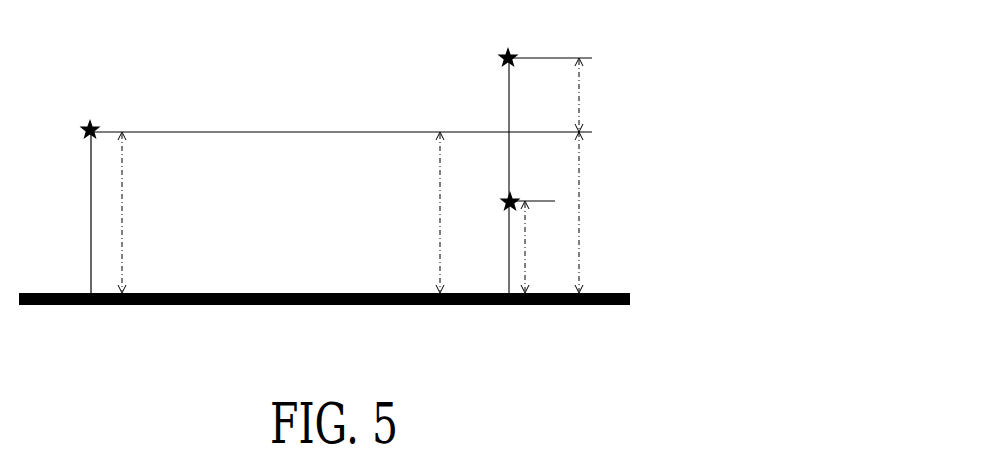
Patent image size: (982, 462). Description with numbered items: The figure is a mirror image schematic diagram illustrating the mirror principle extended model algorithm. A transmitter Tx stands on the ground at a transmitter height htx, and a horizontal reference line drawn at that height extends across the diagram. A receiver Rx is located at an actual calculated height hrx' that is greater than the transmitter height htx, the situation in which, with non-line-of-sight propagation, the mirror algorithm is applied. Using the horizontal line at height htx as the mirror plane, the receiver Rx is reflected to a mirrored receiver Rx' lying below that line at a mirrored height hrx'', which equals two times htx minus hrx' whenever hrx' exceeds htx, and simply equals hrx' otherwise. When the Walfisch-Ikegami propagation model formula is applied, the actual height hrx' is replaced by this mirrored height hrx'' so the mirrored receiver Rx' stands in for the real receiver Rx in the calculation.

The transmitter Tx is at (80, 206).
The receiver Rx is at (527, 168).
The mirrored receiver Rx' is at (510, 195).
The transmitter height htx is at (281, 212).
The actual receiver height hrx' is at (595, 175).
The mirrored height hrx'' is at (536, 247).